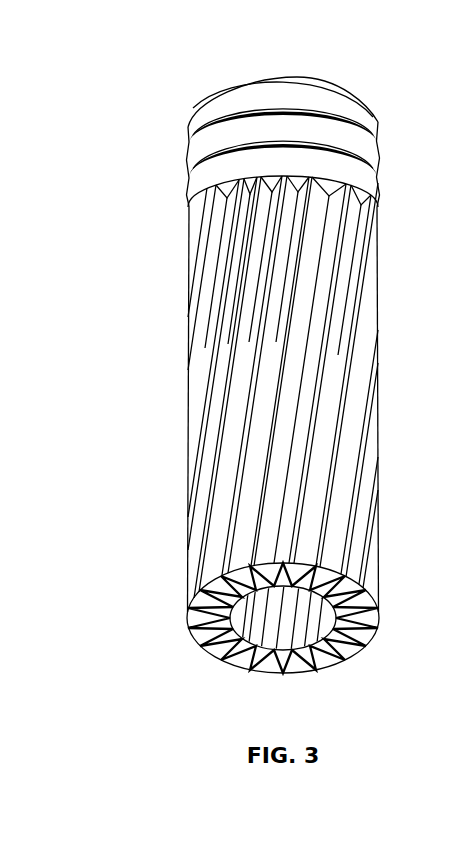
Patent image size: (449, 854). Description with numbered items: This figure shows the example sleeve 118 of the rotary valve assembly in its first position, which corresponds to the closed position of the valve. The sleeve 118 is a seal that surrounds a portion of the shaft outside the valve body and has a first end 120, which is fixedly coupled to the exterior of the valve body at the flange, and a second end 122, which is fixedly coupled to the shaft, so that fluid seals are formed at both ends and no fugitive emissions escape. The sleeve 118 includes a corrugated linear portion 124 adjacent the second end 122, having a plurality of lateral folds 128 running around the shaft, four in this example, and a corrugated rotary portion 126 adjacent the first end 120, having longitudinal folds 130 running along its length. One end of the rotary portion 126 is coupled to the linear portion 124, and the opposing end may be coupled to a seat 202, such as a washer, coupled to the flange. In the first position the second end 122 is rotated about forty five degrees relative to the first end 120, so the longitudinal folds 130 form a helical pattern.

The sleeve 118 is at (360, 76).
The first end 120 is at (345, 652).
The second end 122 is at (248, 80).
The linear portion 124 is at (173, 90).
The rotary portion 126 is at (172, 220).
The lateral folds 128 is at (367, 137).
The longitudinal folds 130 is at (332, 311).
The seat 202 is at (238, 672).